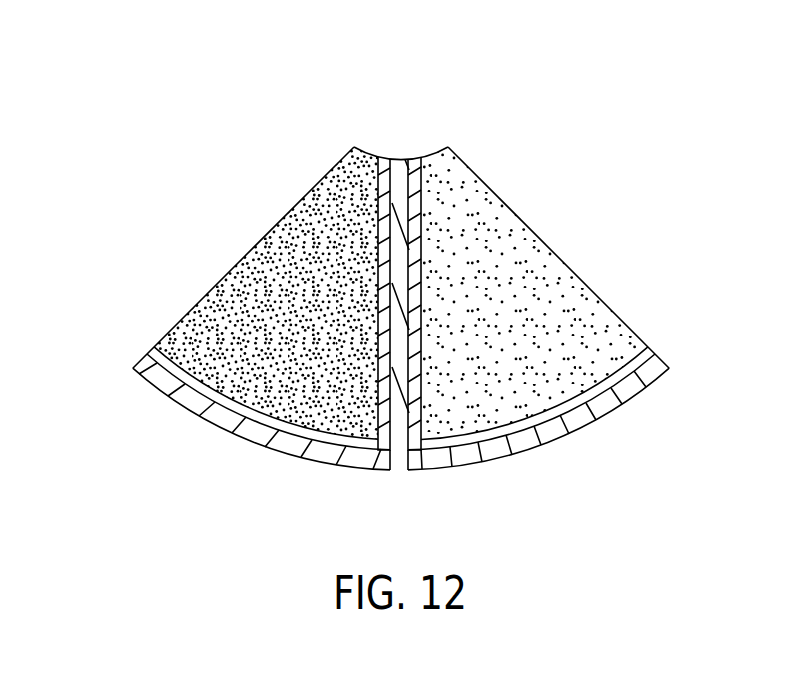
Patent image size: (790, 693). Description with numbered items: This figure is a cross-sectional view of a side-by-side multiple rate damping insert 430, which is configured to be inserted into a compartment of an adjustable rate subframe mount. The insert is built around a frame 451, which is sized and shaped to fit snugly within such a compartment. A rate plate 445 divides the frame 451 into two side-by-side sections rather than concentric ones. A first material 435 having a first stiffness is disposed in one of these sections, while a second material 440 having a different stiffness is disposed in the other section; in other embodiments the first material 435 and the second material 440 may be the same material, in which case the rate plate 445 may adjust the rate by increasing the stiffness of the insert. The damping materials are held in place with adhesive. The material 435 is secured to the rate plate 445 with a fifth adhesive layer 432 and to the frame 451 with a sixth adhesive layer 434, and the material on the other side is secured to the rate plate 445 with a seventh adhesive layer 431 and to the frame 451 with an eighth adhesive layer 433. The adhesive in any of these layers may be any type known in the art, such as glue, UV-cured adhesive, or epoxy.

The side-by-side damping insert 430 is at (490, 107).
The seventh adhesive layer 431 is at (383, 158).
The fifth adhesive layer 432 is at (415, 158).
The eighth adhesive layer 433 is at (157, 352).
The sixth adhesive layer 434 is at (645, 355).
The first material 435 is at (567, 290).
The second material 440 is at (250, 287).
The rate plate 445 is at (400, 193).
The frame 451 is at (445, 455).